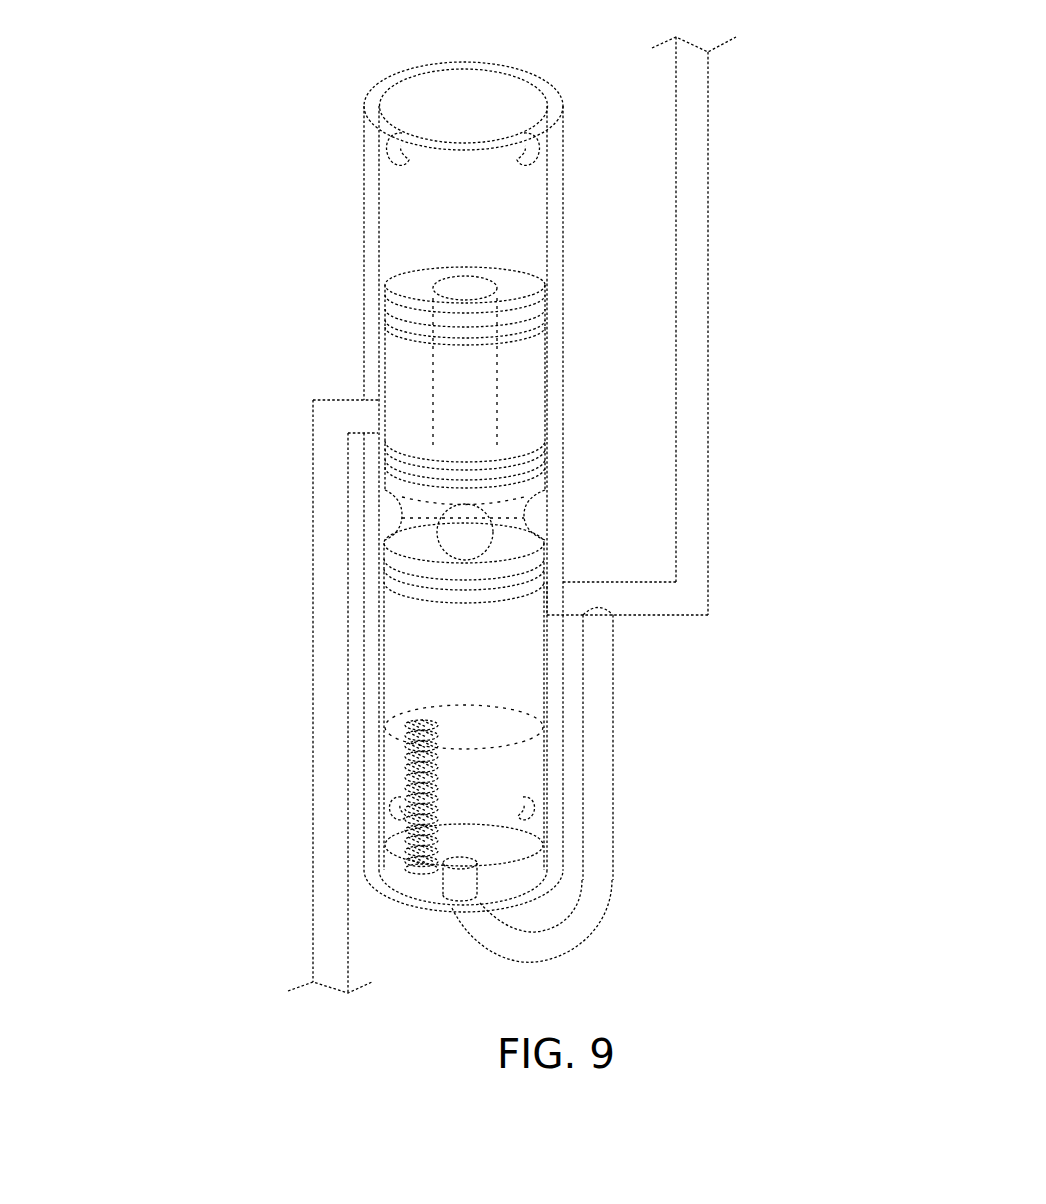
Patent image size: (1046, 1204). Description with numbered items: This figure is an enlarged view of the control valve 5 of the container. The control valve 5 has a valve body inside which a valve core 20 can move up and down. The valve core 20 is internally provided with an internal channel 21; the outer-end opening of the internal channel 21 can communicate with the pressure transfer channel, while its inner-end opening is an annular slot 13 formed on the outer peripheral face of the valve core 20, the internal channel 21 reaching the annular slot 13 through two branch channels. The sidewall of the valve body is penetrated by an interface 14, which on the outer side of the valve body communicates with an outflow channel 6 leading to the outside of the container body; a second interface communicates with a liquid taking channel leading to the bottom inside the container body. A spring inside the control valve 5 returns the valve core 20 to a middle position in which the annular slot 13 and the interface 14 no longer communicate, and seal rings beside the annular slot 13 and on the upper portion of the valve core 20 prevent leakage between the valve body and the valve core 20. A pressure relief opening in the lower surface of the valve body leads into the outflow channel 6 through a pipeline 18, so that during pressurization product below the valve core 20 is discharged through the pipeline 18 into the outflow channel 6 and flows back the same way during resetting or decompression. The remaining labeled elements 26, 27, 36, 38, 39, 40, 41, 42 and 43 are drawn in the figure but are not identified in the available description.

The control valve 5 is at (408, 388).
The outflow channel 6 is at (693, 190).
The annular slot 13 is at (375, 282).
The interface 14 is at (325, 873).
The pipeline 18 is at (465, 290).
The valve core 20 is at (512, 690).
The internal channel 21 is at (463, 373).
The inlet port 26 is at (372, 423).
The connecting plate 27 is at (552, 598).
The valve 36 is at (475, 867).
The annular groove 38 is at (527, 514).
The transverse hole 39 is at (455, 547).
The spring 40 is at (405, 770).
The piston ring 41 is at (557, 440).
The retaining clip 42 is at (392, 145).
The return pipe bend 43 is at (573, 930).